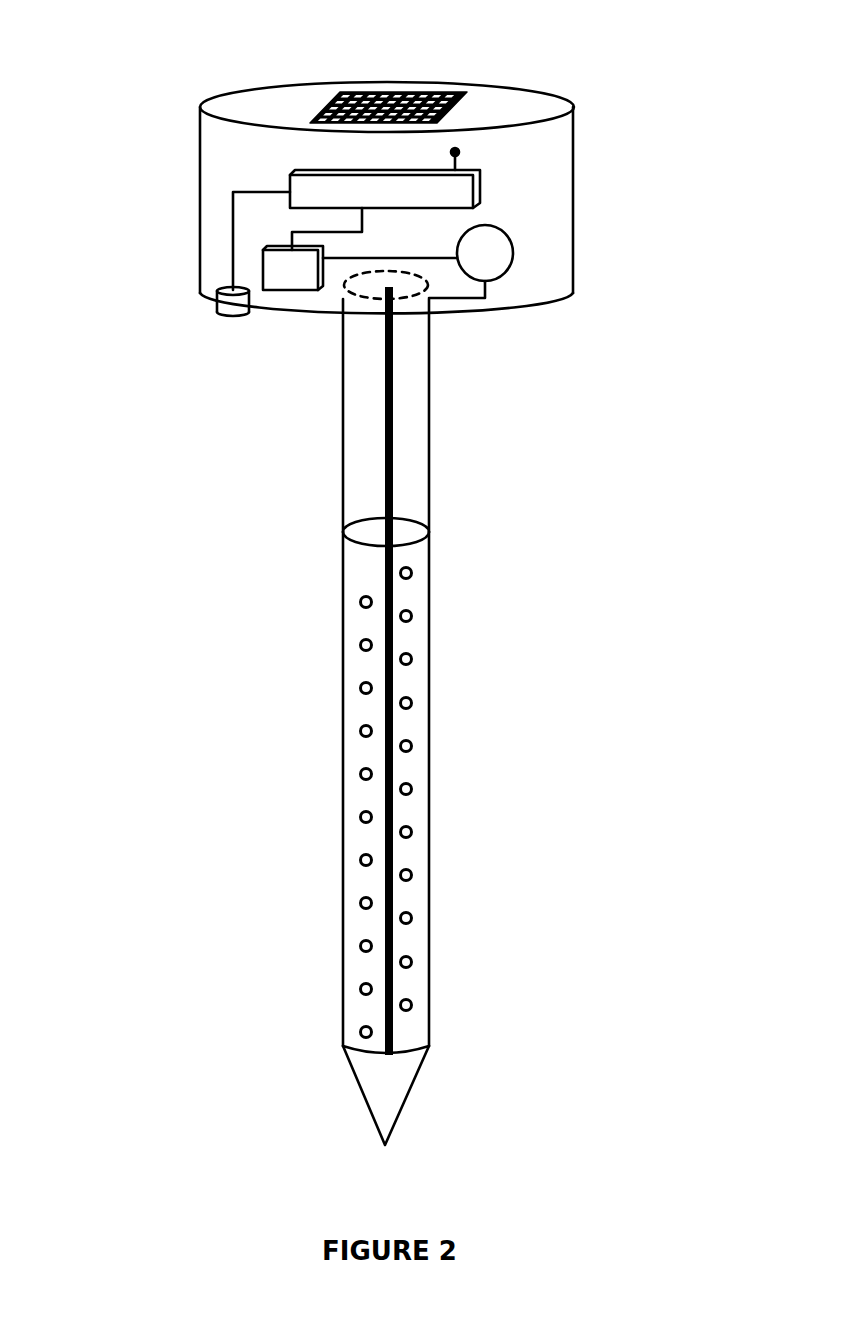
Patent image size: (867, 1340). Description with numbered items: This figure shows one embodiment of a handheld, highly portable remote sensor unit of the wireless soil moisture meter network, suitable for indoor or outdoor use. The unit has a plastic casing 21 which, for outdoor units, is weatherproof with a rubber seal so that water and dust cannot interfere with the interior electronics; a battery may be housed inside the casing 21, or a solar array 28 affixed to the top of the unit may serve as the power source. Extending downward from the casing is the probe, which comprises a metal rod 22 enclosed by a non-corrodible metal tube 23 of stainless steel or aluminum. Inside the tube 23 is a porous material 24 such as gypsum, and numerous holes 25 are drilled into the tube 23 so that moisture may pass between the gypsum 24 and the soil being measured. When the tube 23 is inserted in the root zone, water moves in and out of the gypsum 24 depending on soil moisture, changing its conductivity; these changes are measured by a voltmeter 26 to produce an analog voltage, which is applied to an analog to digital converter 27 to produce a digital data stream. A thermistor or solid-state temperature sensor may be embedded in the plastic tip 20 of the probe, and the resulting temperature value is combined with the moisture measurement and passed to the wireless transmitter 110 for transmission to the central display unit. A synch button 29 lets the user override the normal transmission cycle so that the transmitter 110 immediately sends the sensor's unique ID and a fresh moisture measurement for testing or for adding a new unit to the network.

The plastic tip 20 is at (412, 1100).
The plastic casing 21 is at (198, 206).
The metal rod 22 is at (395, 482).
The metal tube 23 is at (349, 462).
The porous material 24 is at (410, 722).
The holes 25 is at (355, 735).
The voltmeter 26 is at (520, 258).
The analog to digital converter 27 is at (288, 293).
The solar array 28 is at (422, 88).
The synch button 29 is at (212, 315).
The wireless transmitter 110 is at (483, 178).